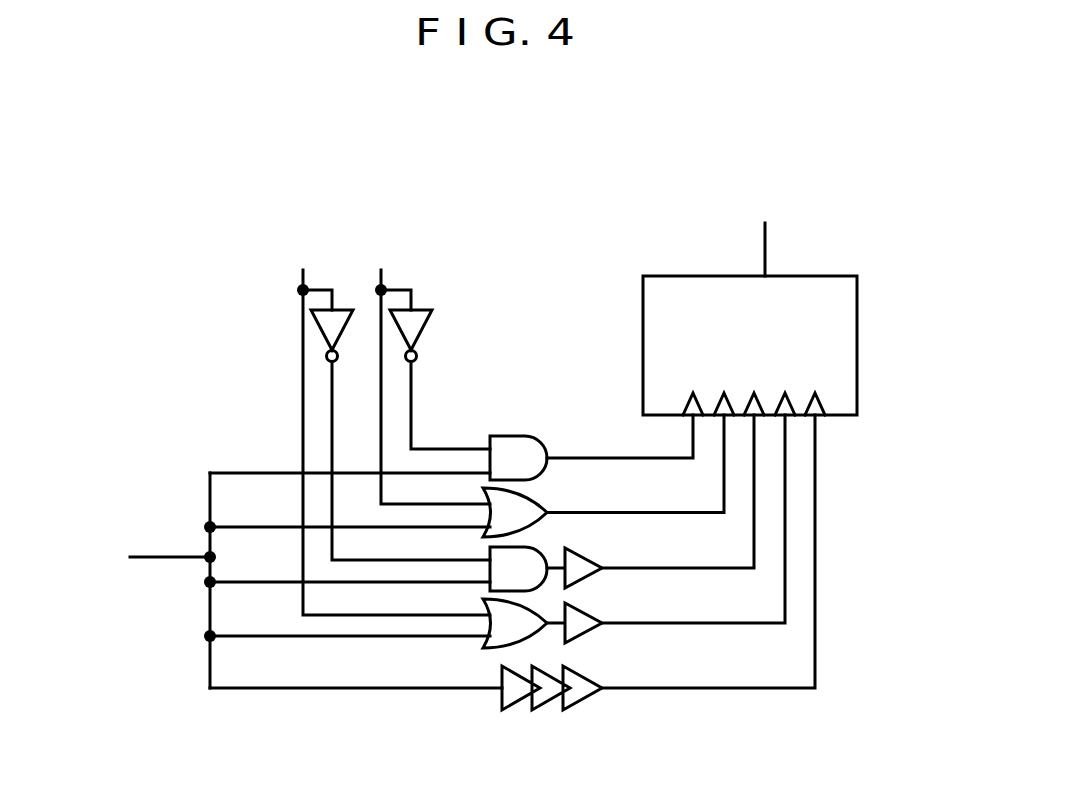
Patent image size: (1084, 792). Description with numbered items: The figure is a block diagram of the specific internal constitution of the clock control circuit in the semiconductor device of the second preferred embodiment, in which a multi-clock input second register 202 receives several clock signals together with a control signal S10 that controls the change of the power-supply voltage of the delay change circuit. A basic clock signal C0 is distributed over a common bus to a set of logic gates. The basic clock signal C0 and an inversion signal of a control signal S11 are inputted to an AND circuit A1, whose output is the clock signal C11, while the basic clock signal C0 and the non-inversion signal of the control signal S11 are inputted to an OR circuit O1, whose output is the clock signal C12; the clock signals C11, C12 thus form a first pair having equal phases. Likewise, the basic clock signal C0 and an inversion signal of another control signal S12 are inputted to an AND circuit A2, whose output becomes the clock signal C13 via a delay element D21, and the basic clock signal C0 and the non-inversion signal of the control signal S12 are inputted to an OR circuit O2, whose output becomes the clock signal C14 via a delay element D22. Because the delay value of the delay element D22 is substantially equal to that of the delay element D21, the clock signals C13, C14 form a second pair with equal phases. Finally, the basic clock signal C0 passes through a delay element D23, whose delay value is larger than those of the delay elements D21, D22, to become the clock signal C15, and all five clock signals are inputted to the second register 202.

The second register 202 is at (820, 276).
The control signal S10 is at (766, 232).
The control signal S11 is at (425, 366).
The control signal S12 is at (383, 422).
The basic clock signal C0 is at (303, 580).
The AND circuit A1 is at (518, 458).
The OR circuit O1 is at (515, 512).
The AND circuit A2 is at (518, 569).
The OR circuit O2 is at (515, 623).
The delay element D21 is at (592, 560).
The delay element D22 is at (598, 617).
The delay element D23 is at (602, 717).
The clock signal C11 is at (620, 436).
The clock signal C12 is at (635, 465).
The clock signal C13 is at (678, 492).
The clock signal C14 is at (693, 519).
The clock signal C15 is at (708, 551).